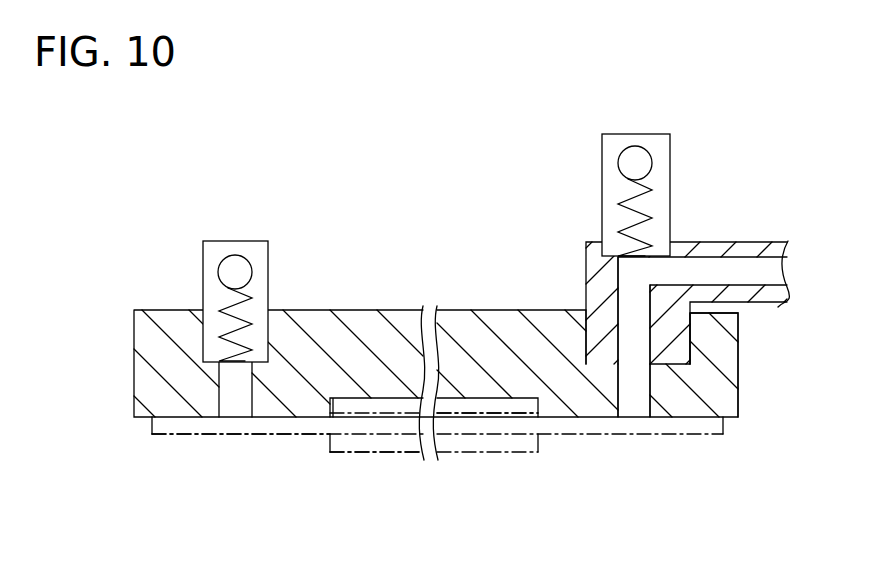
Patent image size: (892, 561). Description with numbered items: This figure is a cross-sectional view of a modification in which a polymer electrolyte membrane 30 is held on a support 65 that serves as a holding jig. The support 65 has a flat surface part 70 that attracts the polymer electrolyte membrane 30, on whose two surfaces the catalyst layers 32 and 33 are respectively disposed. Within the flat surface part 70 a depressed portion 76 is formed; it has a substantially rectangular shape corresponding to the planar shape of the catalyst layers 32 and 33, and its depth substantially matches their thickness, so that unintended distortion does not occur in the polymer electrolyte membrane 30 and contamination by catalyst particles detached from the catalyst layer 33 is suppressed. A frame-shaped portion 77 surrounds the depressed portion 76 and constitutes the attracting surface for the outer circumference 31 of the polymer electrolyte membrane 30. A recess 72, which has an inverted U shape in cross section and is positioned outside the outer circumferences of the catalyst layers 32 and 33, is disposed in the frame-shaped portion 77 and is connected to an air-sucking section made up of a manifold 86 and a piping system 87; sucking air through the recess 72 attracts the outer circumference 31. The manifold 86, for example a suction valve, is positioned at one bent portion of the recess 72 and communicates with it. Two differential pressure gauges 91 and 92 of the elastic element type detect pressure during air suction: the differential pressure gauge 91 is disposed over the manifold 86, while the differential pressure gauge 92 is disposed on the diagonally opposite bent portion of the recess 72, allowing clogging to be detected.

The support 65 is at (740, 385).
The manifold 86 is at (690, 338).
The piping system 87 is at (716, 243).
The recess 72 is at (245, 393).
The differential pressure gauge 91 is at (602, 177).
The differential pressure gauge 92 is at (270, 268).
The depressed portion 76 is at (389, 400).
The frame-shaped portion 77 is at (302, 417).
The flat surface part 70 is at (420, 497).
The polymer electrolyte membrane 30 is at (480, 434).
The outer circumference 31 is at (180, 435).
The catalyst layer 32 is at (455, 452).
The catalyst layer 33 is at (500, 416).